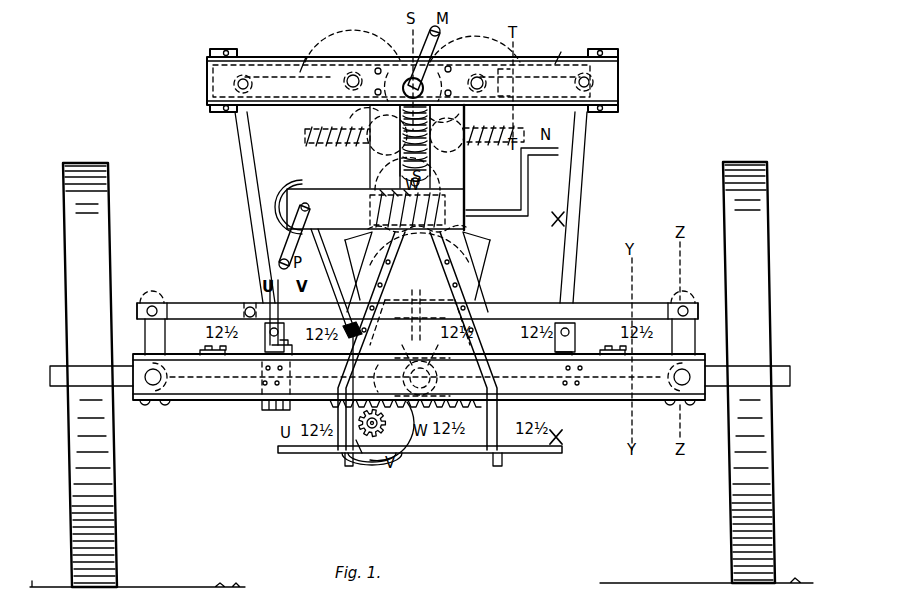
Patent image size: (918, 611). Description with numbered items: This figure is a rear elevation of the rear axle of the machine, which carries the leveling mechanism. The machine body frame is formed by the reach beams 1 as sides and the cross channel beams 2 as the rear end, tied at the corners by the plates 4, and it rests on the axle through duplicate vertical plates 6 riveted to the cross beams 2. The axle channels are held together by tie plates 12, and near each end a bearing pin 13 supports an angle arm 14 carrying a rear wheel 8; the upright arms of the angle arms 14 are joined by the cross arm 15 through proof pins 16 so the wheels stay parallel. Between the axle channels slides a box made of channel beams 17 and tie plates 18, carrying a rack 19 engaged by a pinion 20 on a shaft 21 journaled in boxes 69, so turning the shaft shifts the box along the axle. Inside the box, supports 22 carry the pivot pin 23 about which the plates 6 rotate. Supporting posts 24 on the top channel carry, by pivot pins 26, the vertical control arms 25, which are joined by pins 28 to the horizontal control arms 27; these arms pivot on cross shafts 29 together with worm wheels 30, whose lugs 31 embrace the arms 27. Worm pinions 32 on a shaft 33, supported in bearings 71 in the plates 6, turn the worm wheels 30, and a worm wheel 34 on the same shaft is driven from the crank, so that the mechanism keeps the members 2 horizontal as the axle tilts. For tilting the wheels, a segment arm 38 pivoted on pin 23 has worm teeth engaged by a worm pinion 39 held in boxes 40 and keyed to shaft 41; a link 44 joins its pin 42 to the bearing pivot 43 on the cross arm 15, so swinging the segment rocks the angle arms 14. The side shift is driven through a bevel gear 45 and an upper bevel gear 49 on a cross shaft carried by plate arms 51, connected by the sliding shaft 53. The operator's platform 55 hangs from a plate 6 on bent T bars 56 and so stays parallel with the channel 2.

The reach beams 1 is at (210, 77).
The cross channel beams 2 is at (280, 57).
The plates 4 is at (220, 49).
The plates 6 is at (466, 172).
The rear wheels 8 is at (66, 255).
The tie plates 12 is at (158, 408).
The bearing pin 13 is at (161, 377).
The angle arms 14 is at (160, 333).
The cross arms 15 is at (200, 304).
The proof pins 16 is at (152, 300).
The channel beams 17 is at (506, 356).
The tie plates 18 is at (262, 384).
The rack 19 is at (330, 388).
The pinion 20 is at (384, 428).
The shaft 21 is at (368, 440).
The support 22 is at (445, 388).
The bearing pin 23 is at (420, 368).
The supporting posts 24 is at (266, 342).
The control arms 25 is at (249, 231).
The pivot pins 26 is at (280, 330).
The horizontal control arms 27 is at (301, 72).
The pins 28 is at (246, 78).
The cross shafts 29 is at (348, 78).
The worm wheels 30 is at (372, 48).
The lugs 31 is at (497, 82).
The worm pinions 32 is at (340, 146).
The shaft 33 is at (384, 144).
The worm wheel 34 is at (428, 153).
The segment arm 38 is at (480, 263).
The worm pinion 39 is at (400, 200).
The boxes 40 is at (370, 203).
The shaft 41 is at (512, 212).
The pin 42 is at (418, 300).
The bearing pivot 43 is at (250, 304).
The connecting link 44 is at (296, 310).
The bevel gear 45 is at (380, 464).
The bevel gear 49 is at (302, 181).
The plate arms 51 is at (375, 209).
The shaft 53 is at (327, 276).
The platform 55 is at (541, 454).
The T bars 56 is at (400, 263).
The boxes 69 is at (378, 398).
The bearings 71 is at (405, 115).